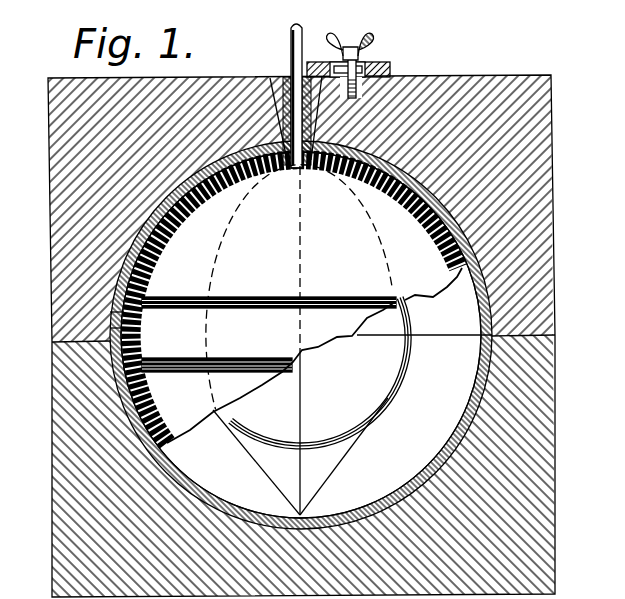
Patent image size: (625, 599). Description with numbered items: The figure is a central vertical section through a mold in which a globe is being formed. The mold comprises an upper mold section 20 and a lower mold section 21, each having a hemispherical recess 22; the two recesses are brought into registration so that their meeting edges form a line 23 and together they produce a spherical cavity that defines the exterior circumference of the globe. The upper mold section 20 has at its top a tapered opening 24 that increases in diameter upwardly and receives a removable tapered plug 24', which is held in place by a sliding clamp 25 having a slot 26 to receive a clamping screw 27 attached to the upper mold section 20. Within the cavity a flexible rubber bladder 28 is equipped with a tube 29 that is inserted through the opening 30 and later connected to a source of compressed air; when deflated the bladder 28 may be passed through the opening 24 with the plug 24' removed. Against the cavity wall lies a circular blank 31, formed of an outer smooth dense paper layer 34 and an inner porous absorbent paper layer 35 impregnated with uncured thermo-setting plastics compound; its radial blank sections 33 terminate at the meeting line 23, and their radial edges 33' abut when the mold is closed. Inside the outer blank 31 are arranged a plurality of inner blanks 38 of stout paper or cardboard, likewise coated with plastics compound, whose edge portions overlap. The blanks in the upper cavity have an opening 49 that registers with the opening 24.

The upper mold section 20 is at (545, 203).
The lower mold section 21 is at (543, 440).
The hemispherical recess 22 is at (475, 208).
The meeting line 23 is at (538, 332).
The tapered opening 24 is at (344, 96).
The removable tapered plug 24' is at (280, 108).
The sliding clamp 25 is at (387, 63).
The slot 26 is at (342, 48).
The clamping screw 27 is at (368, 48).
The flexible rubber bladder 28 is at (418, 200).
The tube 29 is at (299, 340).
The opening 30 is at (274, 127).
The circular blank 31 is at (234, 429).
The radial blank section 33 is at (269, 341).
The radial edge 33' is at (312, 384).
The outer paper layer 34 is at (110, 312).
The inner porous paper layer 35 is at (110, 328).
The inner blank 38 is at (172, 222).
The opening 49 is at (310, 168).